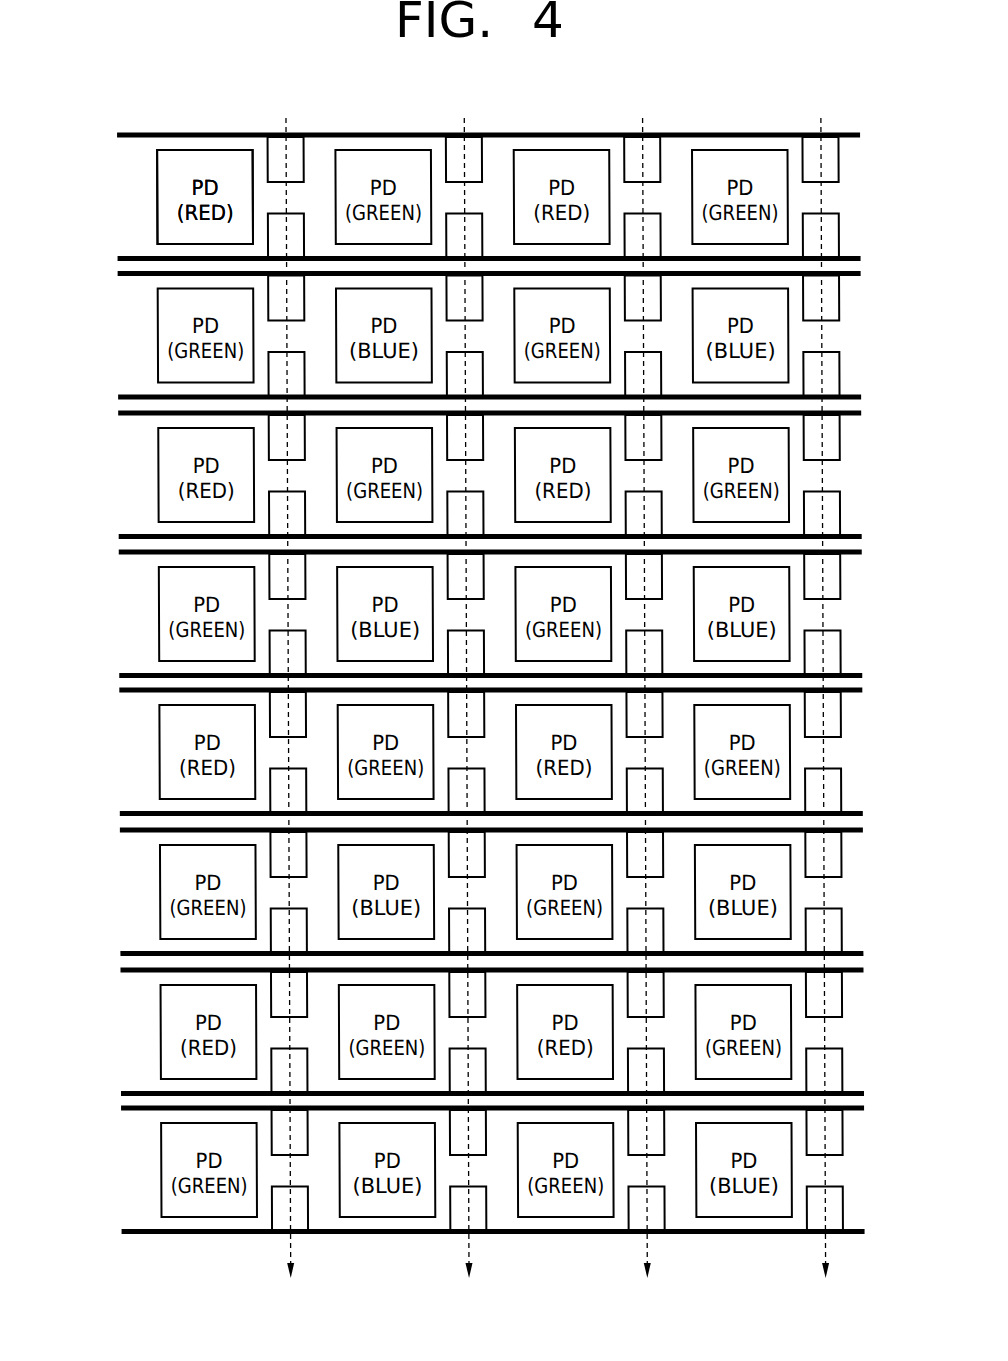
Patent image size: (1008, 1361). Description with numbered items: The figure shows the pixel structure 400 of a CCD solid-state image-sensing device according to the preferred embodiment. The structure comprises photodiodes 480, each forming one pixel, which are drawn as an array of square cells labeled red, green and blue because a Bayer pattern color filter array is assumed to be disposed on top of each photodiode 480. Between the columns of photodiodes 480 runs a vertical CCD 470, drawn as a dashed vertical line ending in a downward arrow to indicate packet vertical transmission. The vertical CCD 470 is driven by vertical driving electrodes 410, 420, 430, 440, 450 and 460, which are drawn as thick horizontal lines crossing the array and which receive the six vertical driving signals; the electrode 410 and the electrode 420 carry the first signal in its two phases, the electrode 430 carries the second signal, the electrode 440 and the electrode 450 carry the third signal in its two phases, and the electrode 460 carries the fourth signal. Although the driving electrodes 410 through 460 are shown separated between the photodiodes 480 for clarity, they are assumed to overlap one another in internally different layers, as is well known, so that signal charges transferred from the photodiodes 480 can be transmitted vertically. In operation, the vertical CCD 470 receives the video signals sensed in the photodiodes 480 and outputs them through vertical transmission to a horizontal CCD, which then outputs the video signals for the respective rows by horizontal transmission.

The pixel structure of CCD solid-state image-sensing device 400 is at (766, 109).
The driving electrode 410 is at (852, 255).
The driving electrode 420 is at (853, 811).
The driving electrode 430 is at (851, 277).
The driving electrode 440 is at (853, 951).
The driving electrode 450 is at (852, 394).
The driving electrode 460 is at (852, 417).
The vertical CCD 470 is at (826, 1247).
The photodiode 480 is at (156, 197).